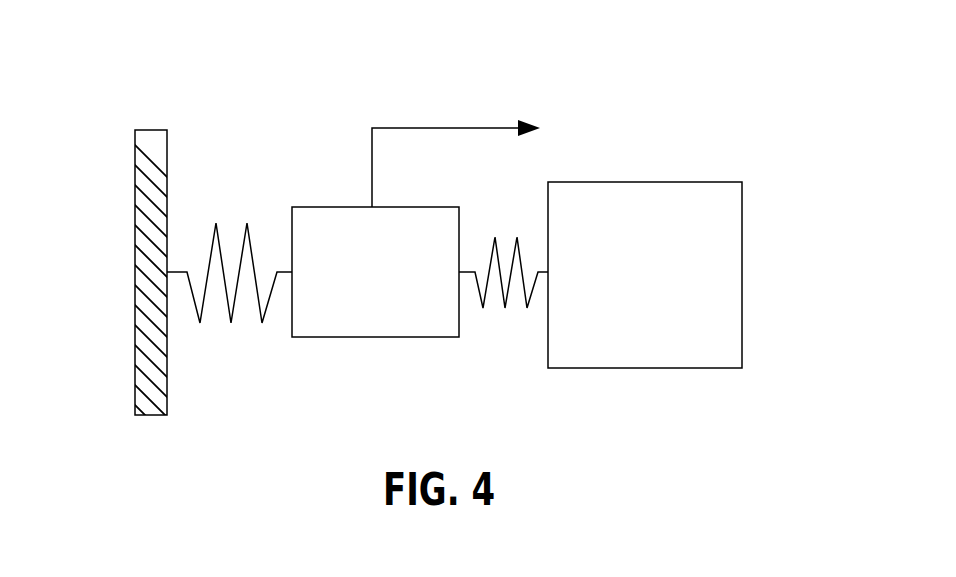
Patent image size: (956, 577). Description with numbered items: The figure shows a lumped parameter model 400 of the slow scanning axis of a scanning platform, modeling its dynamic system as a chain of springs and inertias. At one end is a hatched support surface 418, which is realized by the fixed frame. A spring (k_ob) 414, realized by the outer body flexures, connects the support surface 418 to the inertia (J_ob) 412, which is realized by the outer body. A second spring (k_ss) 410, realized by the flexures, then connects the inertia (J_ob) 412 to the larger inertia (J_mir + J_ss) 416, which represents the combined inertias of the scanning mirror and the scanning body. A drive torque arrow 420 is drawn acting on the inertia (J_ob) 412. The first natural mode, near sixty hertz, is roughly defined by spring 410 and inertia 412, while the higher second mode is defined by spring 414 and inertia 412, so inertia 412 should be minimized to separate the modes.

The lumped parameter model 400 is at (776, 49).
The spring (k_ss) 410 is at (509, 333).
The inertia (J_ob) 412 is at (368, 338).
The spring (k_ob) 414 is at (222, 340).
The inertia (J_mir + J_ss) 416 is at (742, 213).
The support surface 418 is at (135, 195).
The drive torque T_drive arrow 420 is at (421, 128).